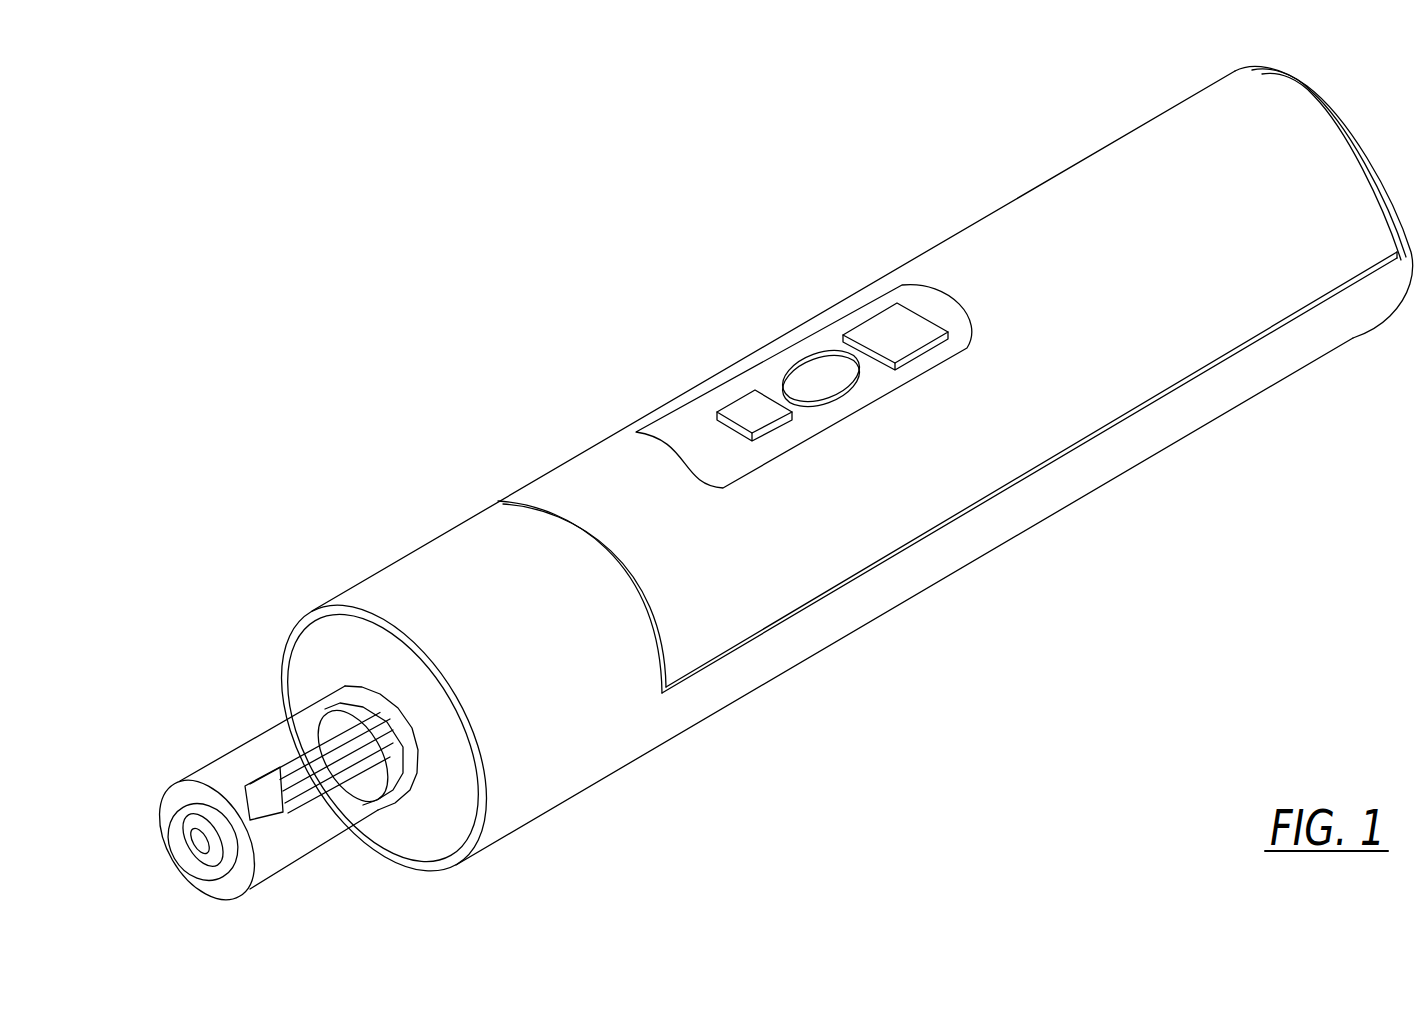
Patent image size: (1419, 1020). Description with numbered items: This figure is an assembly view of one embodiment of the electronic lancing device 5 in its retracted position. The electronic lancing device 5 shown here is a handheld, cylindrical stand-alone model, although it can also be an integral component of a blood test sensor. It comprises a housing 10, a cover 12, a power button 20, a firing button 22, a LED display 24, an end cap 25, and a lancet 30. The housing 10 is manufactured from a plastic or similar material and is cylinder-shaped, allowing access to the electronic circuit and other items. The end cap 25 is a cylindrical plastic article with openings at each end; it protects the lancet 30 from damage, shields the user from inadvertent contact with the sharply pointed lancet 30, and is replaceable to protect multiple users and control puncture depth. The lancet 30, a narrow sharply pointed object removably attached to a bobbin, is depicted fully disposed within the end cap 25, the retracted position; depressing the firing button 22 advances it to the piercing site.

The electronic lancing device 5 is at (655, 172).
The housing 10 is at (620, 755).
The cover 12 is at (1070, 185).
The power button 20 is at (878, 320).
The firing button 22 is at (803, 364).
The LED display 24 is at (745, 407).
The end cap 25 is at (263, 736).
The lancet 30 is at (250, 791).